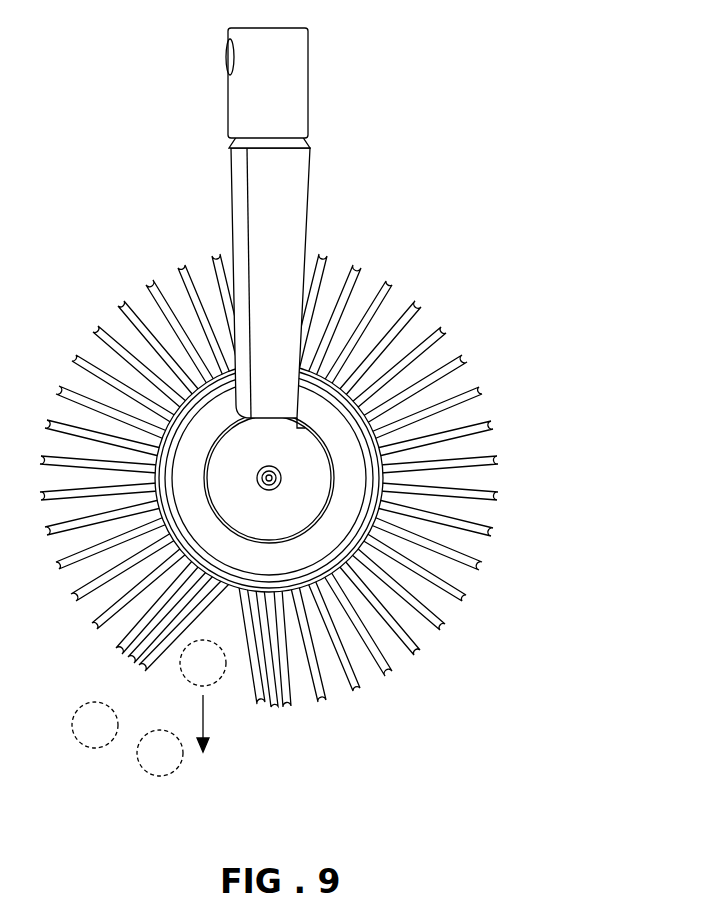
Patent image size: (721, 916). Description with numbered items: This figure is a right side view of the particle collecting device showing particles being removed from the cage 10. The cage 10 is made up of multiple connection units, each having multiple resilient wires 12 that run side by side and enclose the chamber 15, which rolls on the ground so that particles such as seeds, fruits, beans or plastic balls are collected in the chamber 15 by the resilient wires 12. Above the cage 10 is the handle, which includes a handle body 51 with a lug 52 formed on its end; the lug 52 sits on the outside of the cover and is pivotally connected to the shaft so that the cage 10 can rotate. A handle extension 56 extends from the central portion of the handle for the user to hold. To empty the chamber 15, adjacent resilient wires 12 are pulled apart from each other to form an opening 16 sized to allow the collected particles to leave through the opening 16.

The cage 10 is at (269, 412).
The chamber 15 is at (269, 487).
The resilient wires 12 is at (421, 300).
The opening 16 is at (237, 690).
The handle body 51 is at (288, 212).
The lug 52 is at (298, 503).
The handle extension 56 is at (290, 82).